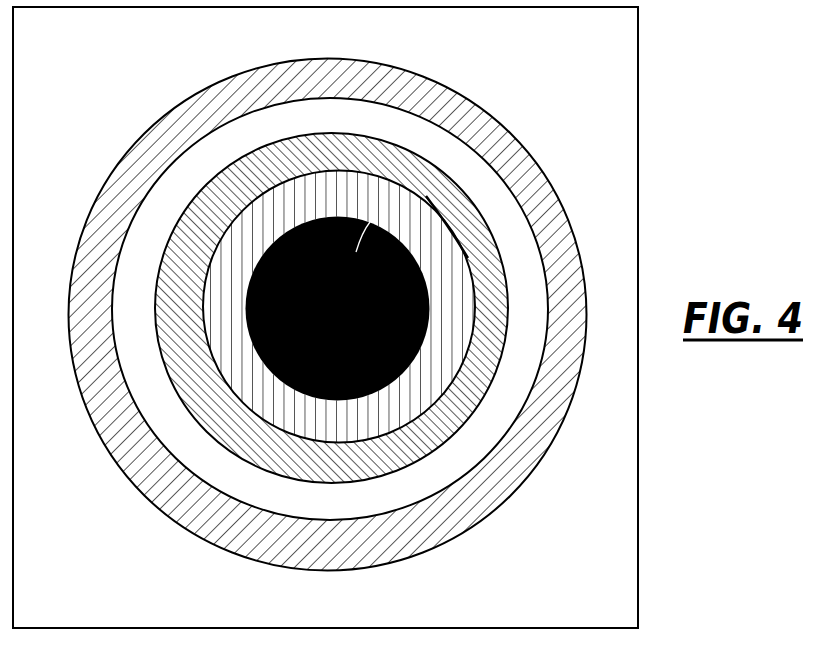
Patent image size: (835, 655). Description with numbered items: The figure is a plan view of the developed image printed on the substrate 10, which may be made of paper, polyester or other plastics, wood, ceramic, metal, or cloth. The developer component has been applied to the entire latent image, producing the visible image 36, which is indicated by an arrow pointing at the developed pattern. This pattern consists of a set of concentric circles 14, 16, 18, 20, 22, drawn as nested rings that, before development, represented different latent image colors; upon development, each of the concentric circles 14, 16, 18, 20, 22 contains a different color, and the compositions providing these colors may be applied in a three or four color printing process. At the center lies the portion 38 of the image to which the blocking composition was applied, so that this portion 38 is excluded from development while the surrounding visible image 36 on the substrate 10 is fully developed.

The substrate 10 is at (556, 135).
The concentric circle 14 is at (409, 72).
The concentric circle 16 is at (384, 101).
The concentric circle 18 is at (378, 140).
The concentric circle 20 is at (382, 180).
The concentric circle 22 is at (437, 336).
The visible image 36 is at (580, 223).
The portion of the image 38 is at (370, 222).